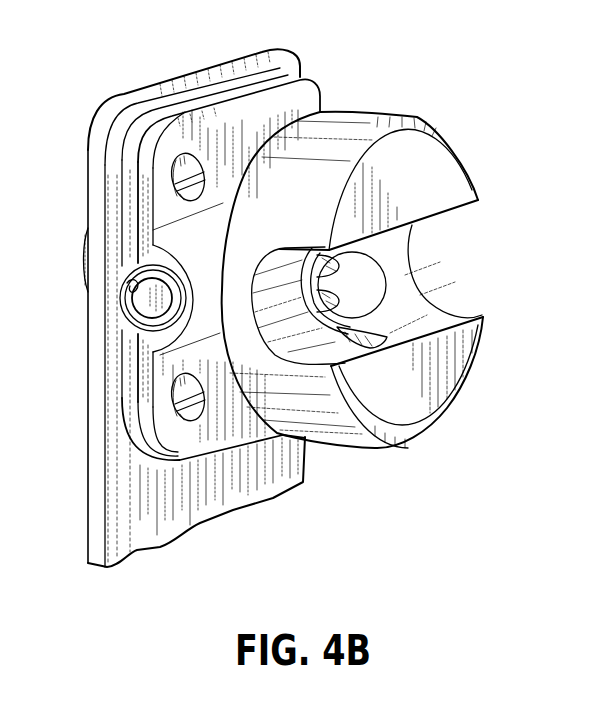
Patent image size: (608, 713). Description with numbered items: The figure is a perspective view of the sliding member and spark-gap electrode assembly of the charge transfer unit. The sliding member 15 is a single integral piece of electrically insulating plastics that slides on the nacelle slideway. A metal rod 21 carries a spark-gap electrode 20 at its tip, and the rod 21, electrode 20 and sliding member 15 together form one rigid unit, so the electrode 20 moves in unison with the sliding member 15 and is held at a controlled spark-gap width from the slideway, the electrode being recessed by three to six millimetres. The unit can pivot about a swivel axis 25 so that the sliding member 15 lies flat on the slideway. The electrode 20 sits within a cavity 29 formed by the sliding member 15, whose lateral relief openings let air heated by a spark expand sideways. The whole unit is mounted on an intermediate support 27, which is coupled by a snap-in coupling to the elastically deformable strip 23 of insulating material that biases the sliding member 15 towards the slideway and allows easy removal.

The sliding member 15 is at (373, 120).
The spark-gap electrode 20 is at (405, 263).
The metal rod 21 is at (84, 248).
The elastically deformable strip 23 is at (153, 518).
The swivel axis 25 is at (148, 304).
The intermediate support 27 is at (203, 443).
The cavity 29 is at (482, 316).